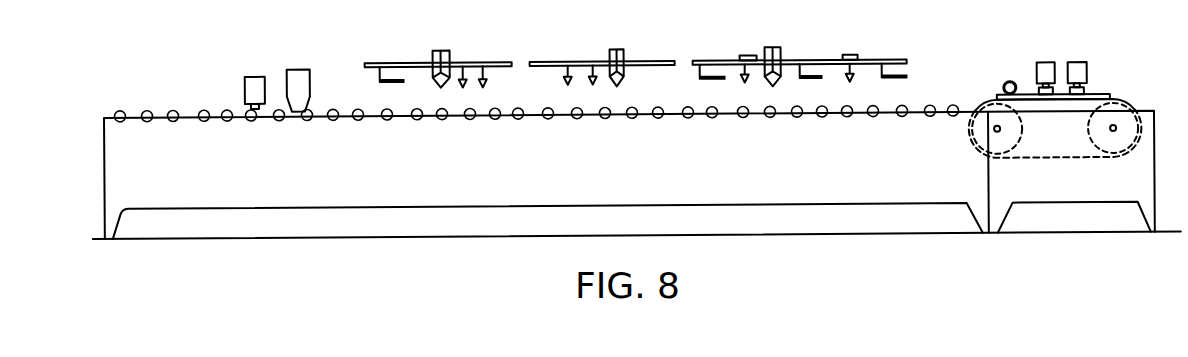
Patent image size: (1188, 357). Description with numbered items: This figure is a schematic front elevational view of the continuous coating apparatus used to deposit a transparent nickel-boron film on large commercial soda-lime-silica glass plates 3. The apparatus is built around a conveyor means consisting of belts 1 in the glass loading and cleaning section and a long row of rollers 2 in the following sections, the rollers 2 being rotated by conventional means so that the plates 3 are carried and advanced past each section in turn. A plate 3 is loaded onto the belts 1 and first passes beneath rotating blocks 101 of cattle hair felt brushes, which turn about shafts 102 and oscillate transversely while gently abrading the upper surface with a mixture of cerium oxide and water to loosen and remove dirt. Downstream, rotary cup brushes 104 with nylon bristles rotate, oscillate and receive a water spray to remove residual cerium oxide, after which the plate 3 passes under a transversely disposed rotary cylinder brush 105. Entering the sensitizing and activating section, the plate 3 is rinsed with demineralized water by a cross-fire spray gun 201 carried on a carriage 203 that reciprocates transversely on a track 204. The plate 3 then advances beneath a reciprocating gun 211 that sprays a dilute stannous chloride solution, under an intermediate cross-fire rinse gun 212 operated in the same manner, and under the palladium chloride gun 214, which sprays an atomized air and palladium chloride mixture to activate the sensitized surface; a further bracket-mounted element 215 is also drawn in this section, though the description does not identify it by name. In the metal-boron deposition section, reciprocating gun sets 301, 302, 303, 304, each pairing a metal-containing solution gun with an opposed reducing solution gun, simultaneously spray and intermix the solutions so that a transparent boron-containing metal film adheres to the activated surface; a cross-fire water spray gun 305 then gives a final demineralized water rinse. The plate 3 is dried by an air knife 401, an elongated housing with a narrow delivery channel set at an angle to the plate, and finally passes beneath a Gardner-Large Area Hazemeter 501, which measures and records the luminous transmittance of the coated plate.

The belts 1 is at (1126, 108).
The rollers 2 is at (149, 112).
The glass plates 3 is at (1029, 98).
The rotating blocks 101 is at (1068, 76).
The shafts 102 is at (1087, 86).
The rotary cup brushes 104 is at (1043, 66).
The rotary cylinder brush 105 is at (1004, 90).
The spray gun 201 is at (890, 82).
The carriage 203 is at (776, 48).
The track 204 is at (782, 72).
The reciprocating gun 211 is at (851, 57).
The cross-fire rinse gun 212 is at (811, 80).
The palladium chloride gun 214 is at (745, 57).
The second station bracket 215 is at (707, 81).
The gun set 301 is at (600, 81).
The gun set 302 is at (565, 78).
The gun set 303 is at (488, 84).
The gun set 304 is at (451, 70).
The water spray gun 305 is at (379, 80).
The air knife 401 is at (301, 61).
The Gardner-Large Area Hazemeter 501 is at (246, 78).